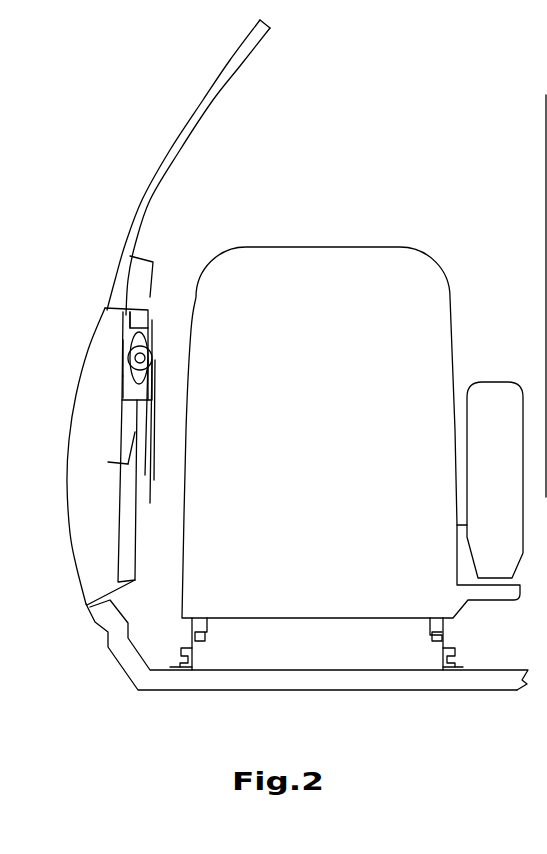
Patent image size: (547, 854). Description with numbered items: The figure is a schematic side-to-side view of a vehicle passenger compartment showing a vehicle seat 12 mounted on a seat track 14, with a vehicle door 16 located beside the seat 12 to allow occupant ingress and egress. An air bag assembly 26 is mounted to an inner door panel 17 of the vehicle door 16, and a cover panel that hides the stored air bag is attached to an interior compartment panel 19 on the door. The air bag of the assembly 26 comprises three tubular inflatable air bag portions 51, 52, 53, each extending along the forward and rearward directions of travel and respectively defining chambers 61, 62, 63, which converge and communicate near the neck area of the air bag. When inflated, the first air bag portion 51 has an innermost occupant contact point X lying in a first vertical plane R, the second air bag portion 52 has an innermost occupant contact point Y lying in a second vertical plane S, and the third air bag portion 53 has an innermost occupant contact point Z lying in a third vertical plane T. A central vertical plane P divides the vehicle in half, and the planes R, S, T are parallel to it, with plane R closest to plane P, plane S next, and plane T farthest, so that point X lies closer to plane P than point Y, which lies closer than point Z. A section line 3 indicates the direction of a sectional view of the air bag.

The section line 3— 3 is at (130, 256).
The vehicle seat 12 is at (424, 335).
The seat track 14 is at (445, 643).
The vehicle door 16 is at (210, 97).
The inner door panel 17 is at (120, 543).
The interior compartment panel 19 is at (137, 562).
The air bag assembly 26 is at (113, 352).
The first air bag portion 51 is at (151, 332).
The second air bag portion 52 is at (160, 356).
The third air bag portion 53 is at (153, 374).
The first chamber 61 is at (128, 338).
The second chamber 62 is at (127, 362).
The third chamber 63 is at (123, 380).
The innermost occupant contact point X is at (138, 356).
The innermost occupant contact point Y is at (143, 362).
The innermost occupant contact point Z is at (150, 382).
The first vertical plane R is at (157, 460).
The second vertical plane S is at (148, 495).
The third vertical plane T is at (145, 475).
The central vertical plane P is at (545, 93).